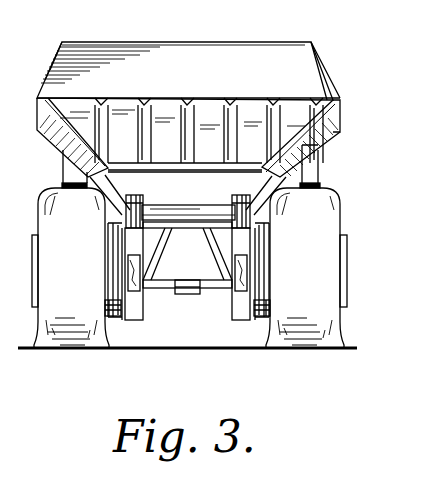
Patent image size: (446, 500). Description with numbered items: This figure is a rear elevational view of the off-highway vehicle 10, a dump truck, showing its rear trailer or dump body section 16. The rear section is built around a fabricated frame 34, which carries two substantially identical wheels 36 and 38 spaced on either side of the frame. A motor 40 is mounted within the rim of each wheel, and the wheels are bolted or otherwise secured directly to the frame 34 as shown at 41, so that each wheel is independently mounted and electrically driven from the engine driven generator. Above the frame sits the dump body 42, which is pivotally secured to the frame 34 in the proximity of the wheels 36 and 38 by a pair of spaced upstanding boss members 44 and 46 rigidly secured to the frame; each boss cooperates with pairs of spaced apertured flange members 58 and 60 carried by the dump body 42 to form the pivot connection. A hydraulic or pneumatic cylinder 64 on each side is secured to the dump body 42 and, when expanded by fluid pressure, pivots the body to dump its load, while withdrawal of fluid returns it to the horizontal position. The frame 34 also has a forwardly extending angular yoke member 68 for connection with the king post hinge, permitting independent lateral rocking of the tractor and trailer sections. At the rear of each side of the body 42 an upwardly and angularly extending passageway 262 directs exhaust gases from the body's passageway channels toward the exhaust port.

The off-highway vehicle 10 is at (157, 52).
The dump body 42 is at (293, 115).
The rear trailer or dump body section 16 is at (60, 152).
The upwardly and angularly extending passageway 262 is at (306, 138).
The hydraulic or pneumatic cylinder 64 is at (62, 182).
The wheel 38 is at (47, 213).
The wheel 36 is at (330, 212).
The upstanding boss member 46 is at (112, 228).
The upstanding boss member 44 is at (262, 214).
The wheel securing means 41 is at (130, 273).
The apertured flange member 58 is at (140, 200).
The apertured flange member 60 is at (233, 203).
The angular yoke member 68 is at (218, 250).
The fabricated frame 34 is at (246, 305).
The motor 40 is at (106, 318).